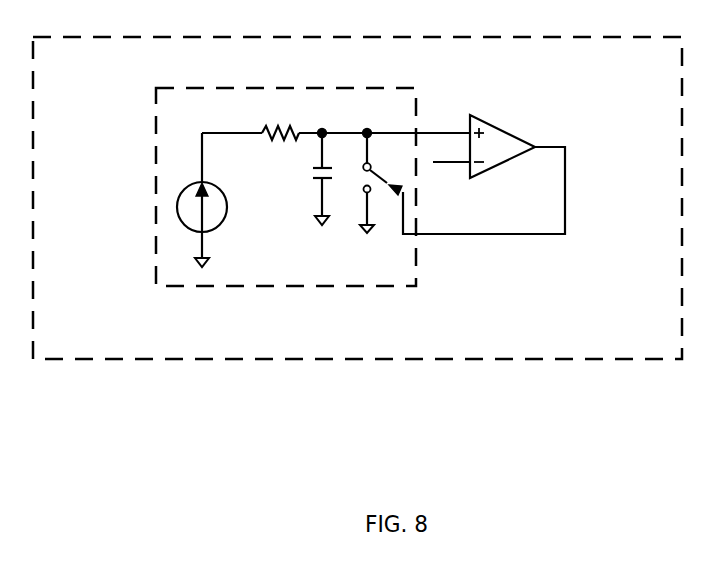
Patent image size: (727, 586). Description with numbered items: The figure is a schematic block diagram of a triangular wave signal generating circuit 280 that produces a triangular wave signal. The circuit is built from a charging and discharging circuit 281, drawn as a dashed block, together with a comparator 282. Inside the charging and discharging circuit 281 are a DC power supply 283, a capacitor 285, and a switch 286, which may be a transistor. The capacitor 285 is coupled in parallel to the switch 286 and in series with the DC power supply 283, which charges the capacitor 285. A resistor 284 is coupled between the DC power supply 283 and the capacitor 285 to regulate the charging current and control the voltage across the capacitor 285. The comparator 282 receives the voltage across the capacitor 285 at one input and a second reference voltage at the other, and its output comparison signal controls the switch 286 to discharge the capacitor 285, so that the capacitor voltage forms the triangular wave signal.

The triangular wave signal generating circuit 280 is at (670, 346).
The charging and discharging circuit 281 is at (155, 117).
The comparator 282 is at (507, 131).
The DC power supply 283 is at (217, 227).
The resistor 284 is at (274, 128).
The capacitor 285 is at (313, 172).
The switch 286 is at (384, 188).